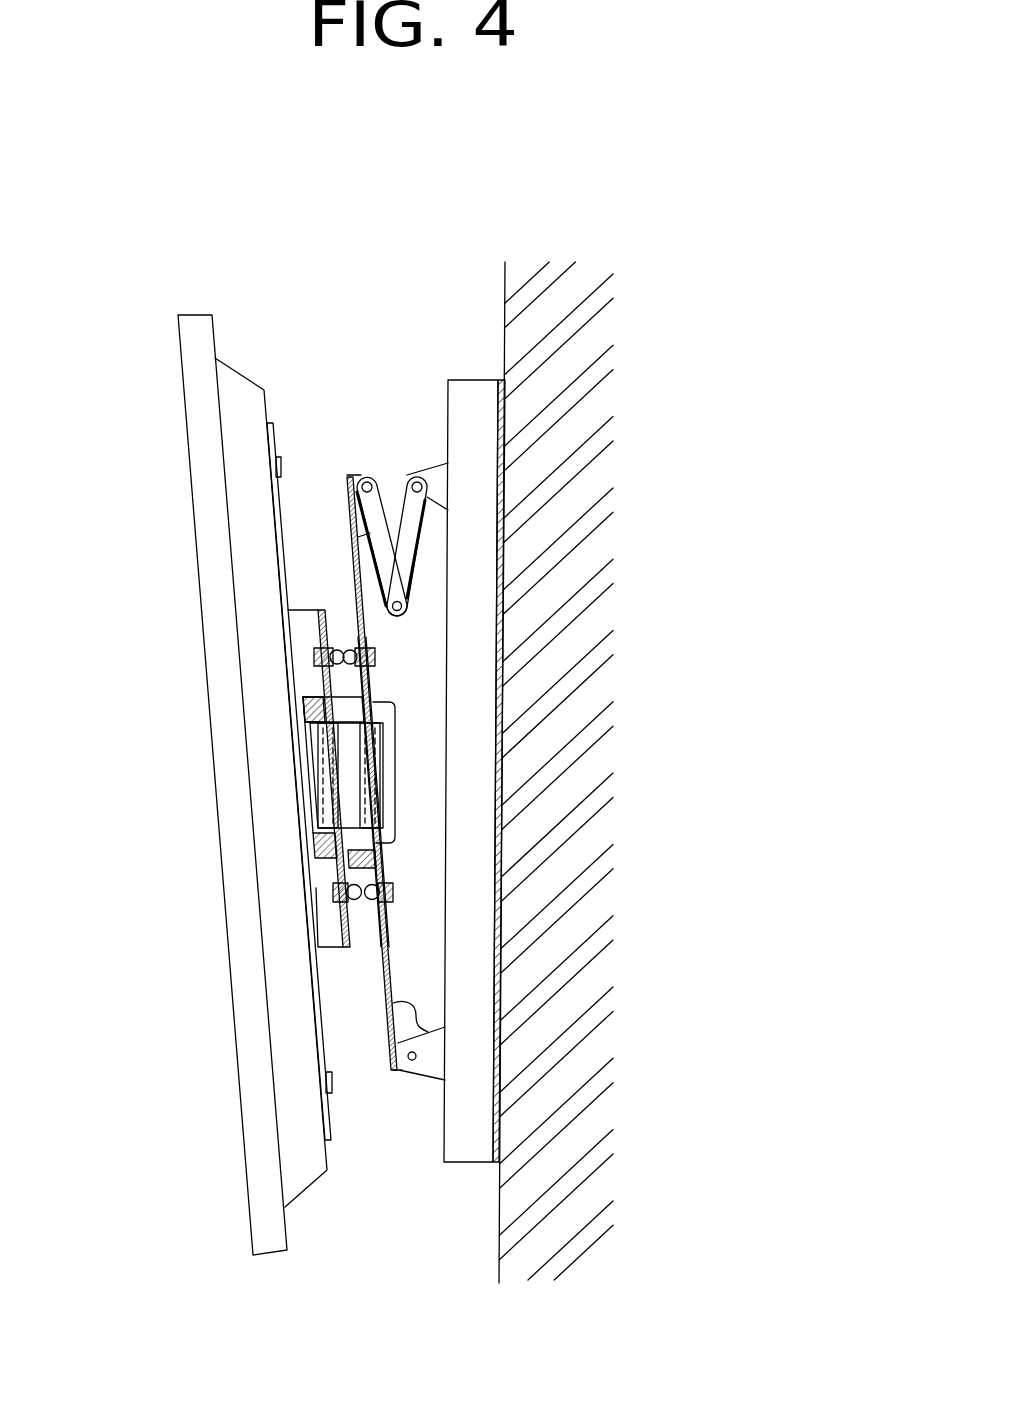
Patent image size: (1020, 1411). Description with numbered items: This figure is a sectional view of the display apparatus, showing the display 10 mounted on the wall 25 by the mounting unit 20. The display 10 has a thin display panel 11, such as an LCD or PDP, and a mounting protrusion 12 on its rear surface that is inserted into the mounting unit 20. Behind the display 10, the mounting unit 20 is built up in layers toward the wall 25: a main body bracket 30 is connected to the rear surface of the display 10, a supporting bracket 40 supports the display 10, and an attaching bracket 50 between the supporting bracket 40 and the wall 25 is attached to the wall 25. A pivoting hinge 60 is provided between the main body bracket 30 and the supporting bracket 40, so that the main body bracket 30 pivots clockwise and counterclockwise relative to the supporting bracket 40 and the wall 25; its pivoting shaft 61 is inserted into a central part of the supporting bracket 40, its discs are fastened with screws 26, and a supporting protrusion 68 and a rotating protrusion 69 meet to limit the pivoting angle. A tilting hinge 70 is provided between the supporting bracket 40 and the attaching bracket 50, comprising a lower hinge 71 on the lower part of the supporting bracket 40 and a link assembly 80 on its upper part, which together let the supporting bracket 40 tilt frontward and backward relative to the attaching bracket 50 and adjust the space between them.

The display 10 is at (413, 754).
The display panel 11 is at (196, 500).
The mounting protrusion 12 is at (283, 464).
The mounting unit 20 is at (457, 771).
The wall 25 is at (505, 327).
The screws 26 is at (395, 905).
The main body bracket 30 is at (327, 1029).
The supporting bracket 40 is at (515, 950).
The attaching bracket 50 is at (505, 993).
The pivoting hinge 60 is at (422, 794).
The pivoting shaft 61 is at (350, 768).
The supporting protrusion 68 is at (330, 845).
The rotating protrusion 69 is at (338, 688).
The tilting hinge 70 is at (547, 771).
The lower hinge 71 is at (413, 1007).
The link assembly 80 is at (429, 535).